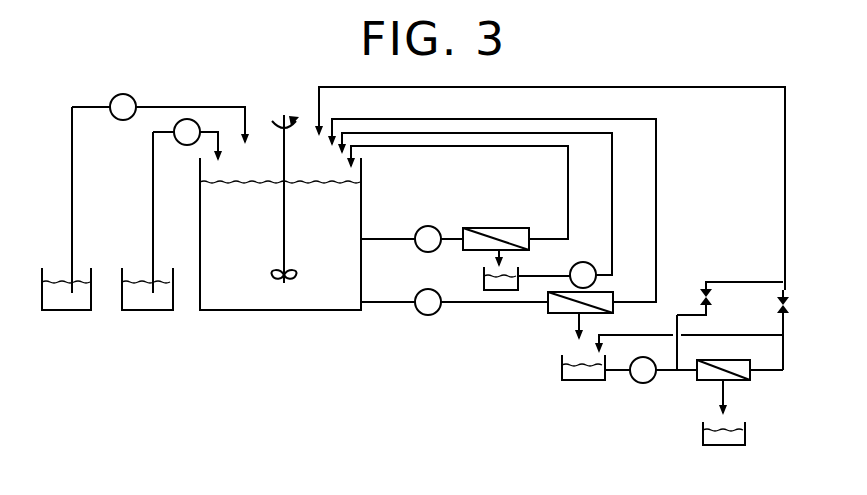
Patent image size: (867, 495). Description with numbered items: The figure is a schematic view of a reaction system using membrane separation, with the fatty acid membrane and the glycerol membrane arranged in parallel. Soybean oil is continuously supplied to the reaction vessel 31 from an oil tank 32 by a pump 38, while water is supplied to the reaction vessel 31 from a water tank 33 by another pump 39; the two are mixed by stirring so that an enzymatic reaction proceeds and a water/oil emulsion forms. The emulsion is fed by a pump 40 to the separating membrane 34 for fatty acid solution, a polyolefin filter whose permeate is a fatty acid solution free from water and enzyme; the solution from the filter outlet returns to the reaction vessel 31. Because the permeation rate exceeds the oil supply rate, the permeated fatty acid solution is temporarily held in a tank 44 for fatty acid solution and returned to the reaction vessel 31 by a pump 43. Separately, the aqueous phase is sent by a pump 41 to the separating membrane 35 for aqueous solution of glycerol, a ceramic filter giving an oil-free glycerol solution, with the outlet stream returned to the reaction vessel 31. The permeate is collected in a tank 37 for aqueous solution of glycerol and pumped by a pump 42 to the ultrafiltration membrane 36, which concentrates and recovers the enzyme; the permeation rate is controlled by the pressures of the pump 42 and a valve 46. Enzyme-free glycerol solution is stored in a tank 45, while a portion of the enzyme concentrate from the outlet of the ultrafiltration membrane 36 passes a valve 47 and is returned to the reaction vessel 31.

The reaction vessel 31 is at (262, 312).
The oil tank 32 is at (68, 312).
The water tank 33 is at (150, 312).
The separating membrane for fatty acid solution 34 is at (490, 228).
The separating membrane for aqueous solution of glycerol 35 is at (615, 292).
The ultrafiltration membrane 36 is at (752, 378).
The tank for aqueous solution of glycerol 37 is at (578, 382).
The pump 38 is at (126, 94).
The pump 39 is at (182, 146).
The pump 40 is at (428, 226).
The pump 41 is at (425, 318).
The pump 42 is at (640, 384).
The pump 43 is at (582, 262).
The tank for fatty acid solution 44 is at (484, 280).
The tank for aqueous solution of glycerol 45 is at (745, 436).
The valve 46 is at (712, 296).
The valve 47 is at (790, 303).